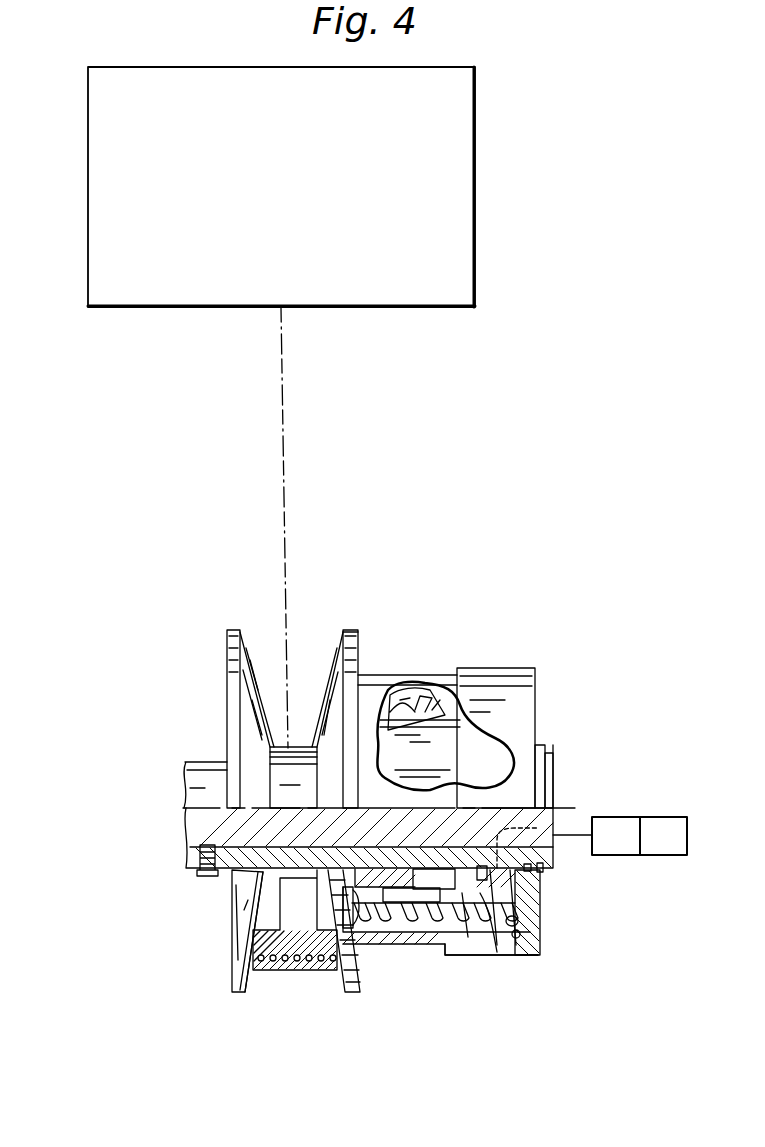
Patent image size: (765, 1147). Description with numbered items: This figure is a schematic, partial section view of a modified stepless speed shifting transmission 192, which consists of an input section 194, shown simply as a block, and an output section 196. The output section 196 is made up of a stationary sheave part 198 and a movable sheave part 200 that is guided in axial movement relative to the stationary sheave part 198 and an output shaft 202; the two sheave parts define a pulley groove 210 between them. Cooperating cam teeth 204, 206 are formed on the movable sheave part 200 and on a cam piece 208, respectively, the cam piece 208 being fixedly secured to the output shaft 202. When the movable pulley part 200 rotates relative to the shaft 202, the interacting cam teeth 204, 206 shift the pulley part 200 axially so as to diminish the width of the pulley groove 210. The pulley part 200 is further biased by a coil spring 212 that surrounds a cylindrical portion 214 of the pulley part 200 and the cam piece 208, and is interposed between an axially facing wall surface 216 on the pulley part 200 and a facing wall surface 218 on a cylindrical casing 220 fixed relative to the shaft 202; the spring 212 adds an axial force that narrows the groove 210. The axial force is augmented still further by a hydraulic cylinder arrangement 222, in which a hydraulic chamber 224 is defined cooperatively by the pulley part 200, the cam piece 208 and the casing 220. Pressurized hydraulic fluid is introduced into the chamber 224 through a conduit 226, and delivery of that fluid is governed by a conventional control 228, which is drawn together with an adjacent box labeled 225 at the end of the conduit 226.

The stepless speed shifting transmission 192 is at (520, 386).
The input section 194 is at (302, 186).
The output section 196 is at (465, 592).
The stationary sheave part 198 is at (233, 686).
The movable sheave part 200 is at (358, 664).
The output shaft 202 is at (207, 828).
The cam teeth 204 is at (387, 957).
The cam teeth 206 is at (412, 923).
The cam piece 208 is at (447, 738).
The pulley groove 210 is at (305, 690).
The coil spring 212 is at (514, 921).
The cylindrical portion 214 is at (387, 730).
The axially facing wall surface 216 is at (282, 913).
The facing wall surface 218 is at (537, 947).
The cylindrical casing 220 is at (530, 907).
The hydraulic cylinder arrangement 222 is at (487, 937).
The hydraulic chamber 224 is at (480, 947).
The switch 225 is at (682, 846).
The conduit 226 is at (577, 835).
The control 228 is at (634, 846).